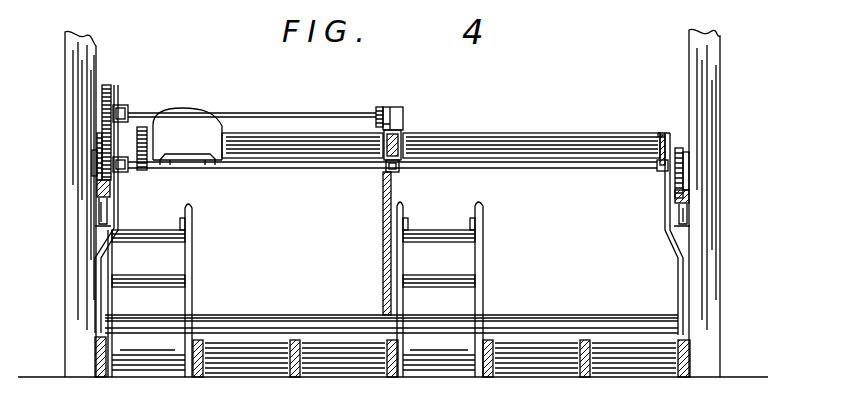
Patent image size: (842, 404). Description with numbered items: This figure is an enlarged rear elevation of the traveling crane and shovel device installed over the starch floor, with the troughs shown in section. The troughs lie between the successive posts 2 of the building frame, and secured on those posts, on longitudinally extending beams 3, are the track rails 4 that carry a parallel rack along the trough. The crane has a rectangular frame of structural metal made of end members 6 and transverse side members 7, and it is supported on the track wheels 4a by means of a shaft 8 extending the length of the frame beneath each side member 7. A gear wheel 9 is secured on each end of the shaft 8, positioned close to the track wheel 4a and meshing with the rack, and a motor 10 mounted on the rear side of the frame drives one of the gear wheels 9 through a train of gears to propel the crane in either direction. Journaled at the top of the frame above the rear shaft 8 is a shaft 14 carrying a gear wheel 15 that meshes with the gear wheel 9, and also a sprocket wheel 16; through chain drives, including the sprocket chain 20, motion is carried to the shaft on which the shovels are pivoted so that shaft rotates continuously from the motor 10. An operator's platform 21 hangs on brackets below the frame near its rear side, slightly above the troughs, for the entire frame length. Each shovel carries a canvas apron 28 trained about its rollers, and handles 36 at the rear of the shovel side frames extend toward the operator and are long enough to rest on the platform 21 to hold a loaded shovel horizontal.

The posts 2 is at (74, 252).
The longitudinally extending beams 3 is at (100, 214).
The track rails 4 is at (96, 184).
The track wheels 4a is at (758, 102).
The end members 6 is at (118, 148).
The transverse side members 7 is at (612, 146).
The shaft 8 is at (592, 169).
The gear wheel 9 is at (100, 142).
The motor 10 is at (193, 130).
The shaft 14 is at (276, 112).
The gear wheel 15 is at (112, 88).
The sprocket wheel 16 is at (378, 108).
The sprocket chain 20 is at (382, 247).
The operator's platform 21 is at (288, 316).
The apron 28 is at (170, 231).
The handles 36 is at (484, 219).